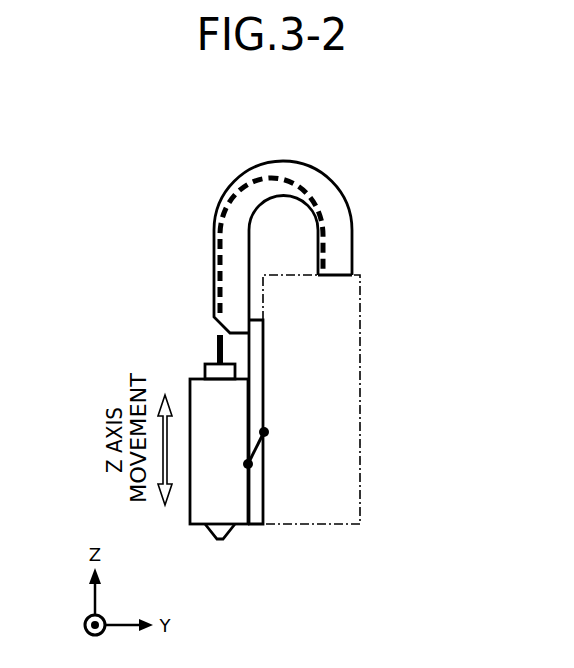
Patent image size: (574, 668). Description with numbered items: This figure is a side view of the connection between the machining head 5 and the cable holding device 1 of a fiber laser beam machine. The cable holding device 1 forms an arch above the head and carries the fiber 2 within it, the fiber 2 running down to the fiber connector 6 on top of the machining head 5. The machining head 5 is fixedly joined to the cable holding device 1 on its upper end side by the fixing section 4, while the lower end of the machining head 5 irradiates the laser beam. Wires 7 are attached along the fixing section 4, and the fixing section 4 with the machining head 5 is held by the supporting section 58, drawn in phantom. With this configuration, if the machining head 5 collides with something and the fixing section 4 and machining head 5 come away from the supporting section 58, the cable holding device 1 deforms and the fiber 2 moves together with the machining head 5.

The cable holding device 1 is at (316, 167).
The fiber 2 is at (323, 213).
The fixing section 4 is at (257, 398).
The machining head 5 is at (198, 505).
The fiber connector 6 is at (207, 371).
The wires 7 is at (263, 448).
The supporting section 58 is at (362, 318).